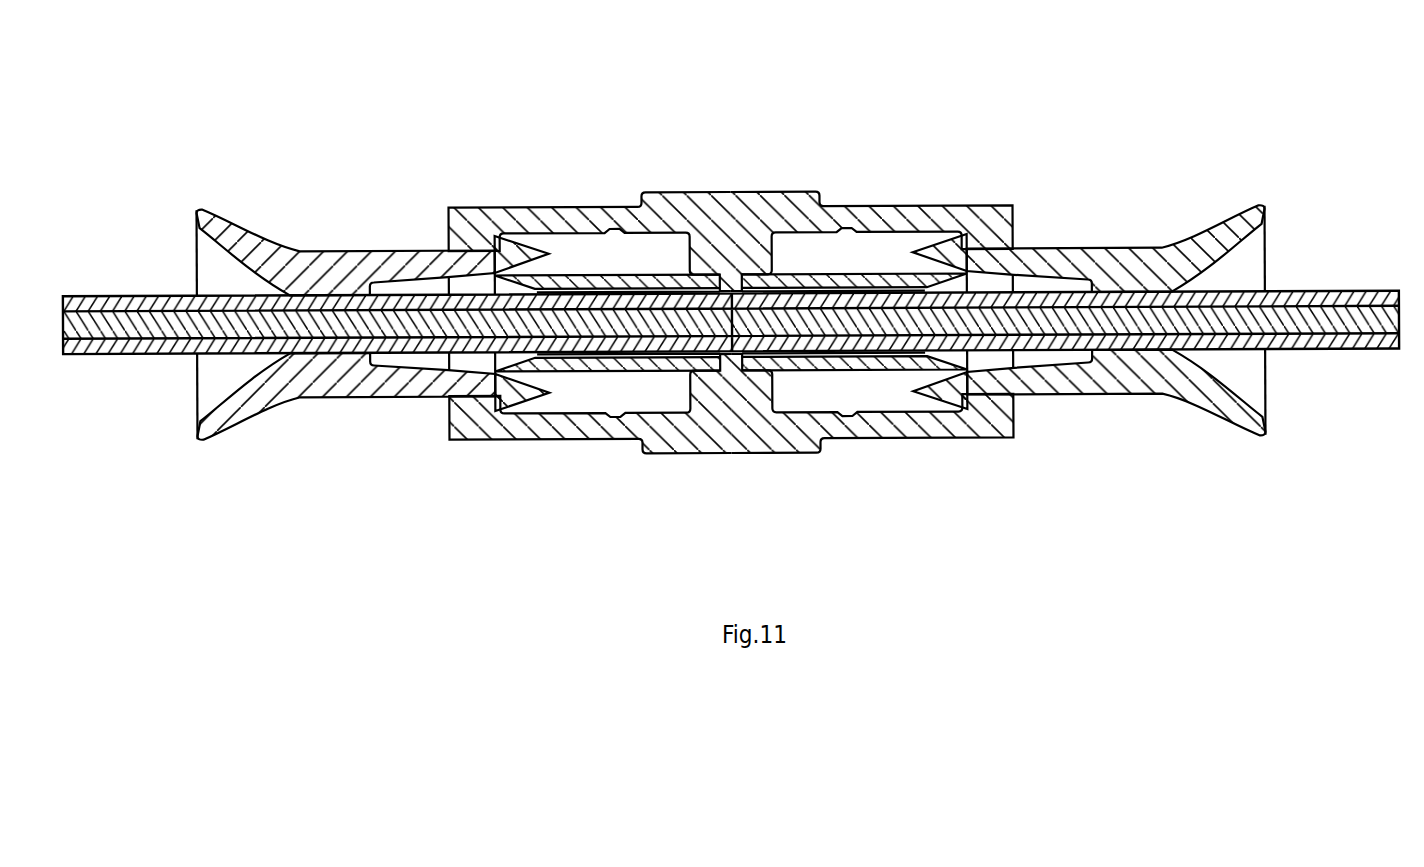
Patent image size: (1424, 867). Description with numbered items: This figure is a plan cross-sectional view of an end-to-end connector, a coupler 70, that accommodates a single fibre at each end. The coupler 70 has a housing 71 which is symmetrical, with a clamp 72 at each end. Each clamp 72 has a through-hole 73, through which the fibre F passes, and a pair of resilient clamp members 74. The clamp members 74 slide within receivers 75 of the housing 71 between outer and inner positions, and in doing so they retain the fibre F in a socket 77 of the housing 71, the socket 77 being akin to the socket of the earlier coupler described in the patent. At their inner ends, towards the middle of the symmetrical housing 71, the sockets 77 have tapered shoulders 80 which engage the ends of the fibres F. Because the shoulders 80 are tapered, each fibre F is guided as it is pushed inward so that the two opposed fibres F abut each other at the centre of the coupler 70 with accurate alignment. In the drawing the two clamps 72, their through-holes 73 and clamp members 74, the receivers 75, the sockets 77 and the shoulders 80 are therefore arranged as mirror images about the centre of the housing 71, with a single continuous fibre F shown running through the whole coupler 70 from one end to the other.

The coupler 70 is at (168, 124).
The housing 71 is at (521, 201).
The clamp 72 is at (298, 235).
The through-hole 73 is at (340, 372).
The resilient clamp member 74 is at (418, 251).
The receiver 75 is at (661, 233).
The socket 77 is at (593, 256).
The tapered shoulder 80 is at (827, 440).
The fibre F is at (98, 354).